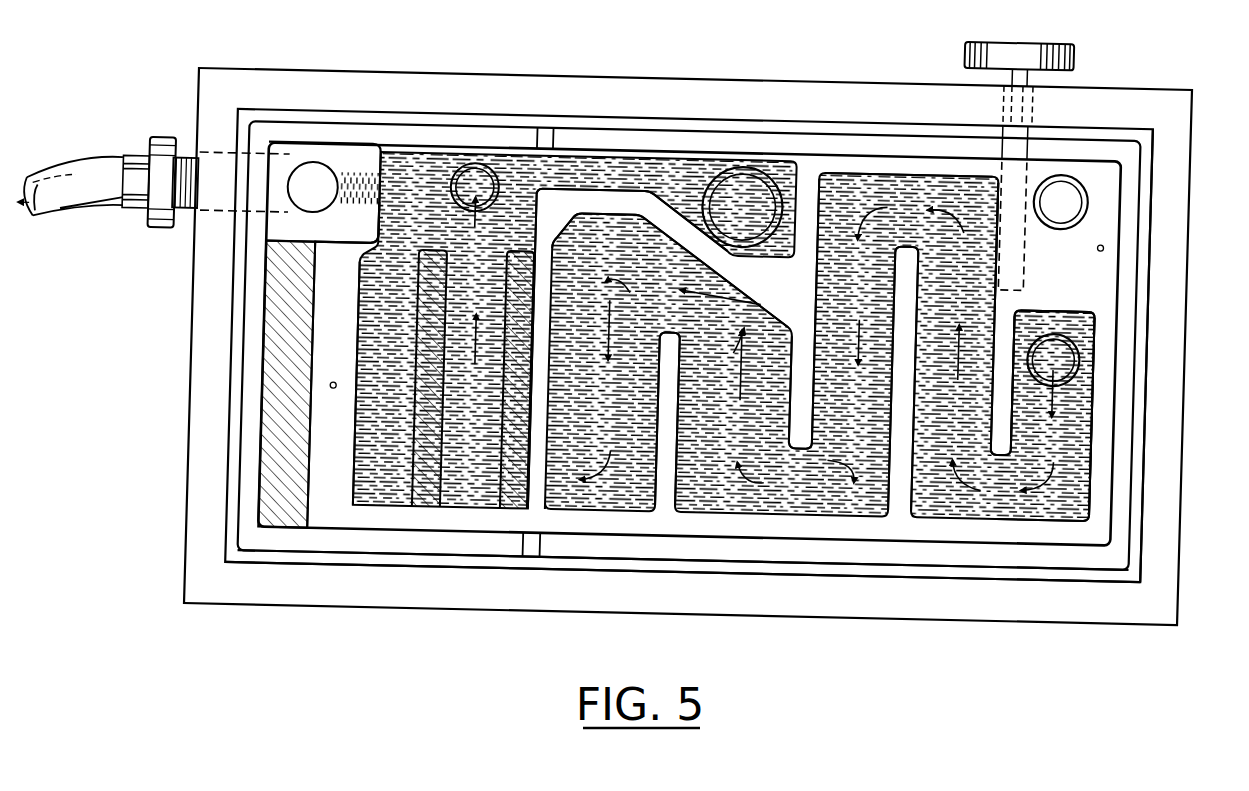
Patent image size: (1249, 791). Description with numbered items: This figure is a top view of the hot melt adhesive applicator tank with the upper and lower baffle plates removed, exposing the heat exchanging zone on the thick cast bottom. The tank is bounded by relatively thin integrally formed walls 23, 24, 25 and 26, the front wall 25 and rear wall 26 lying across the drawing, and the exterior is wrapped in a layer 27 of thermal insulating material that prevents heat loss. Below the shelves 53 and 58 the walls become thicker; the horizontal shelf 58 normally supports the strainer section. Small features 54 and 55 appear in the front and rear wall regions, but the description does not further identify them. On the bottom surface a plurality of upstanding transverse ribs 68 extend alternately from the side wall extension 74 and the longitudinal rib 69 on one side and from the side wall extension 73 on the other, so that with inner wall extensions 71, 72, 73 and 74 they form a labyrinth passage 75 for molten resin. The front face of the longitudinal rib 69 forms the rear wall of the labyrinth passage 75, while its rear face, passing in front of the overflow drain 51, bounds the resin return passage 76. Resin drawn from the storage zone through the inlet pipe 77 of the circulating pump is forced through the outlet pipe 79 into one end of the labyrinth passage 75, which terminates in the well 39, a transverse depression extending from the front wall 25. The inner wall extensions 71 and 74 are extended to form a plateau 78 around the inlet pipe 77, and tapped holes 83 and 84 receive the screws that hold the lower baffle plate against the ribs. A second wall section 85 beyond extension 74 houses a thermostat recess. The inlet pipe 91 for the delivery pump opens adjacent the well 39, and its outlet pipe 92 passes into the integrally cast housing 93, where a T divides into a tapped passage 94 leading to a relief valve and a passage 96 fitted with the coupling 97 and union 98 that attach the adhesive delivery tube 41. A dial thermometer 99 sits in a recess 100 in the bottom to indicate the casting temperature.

The wall 23 is at (728, 520).
The wall 24 is at (628, 343).
The front wall 25 is at (682, 579).
The rear wall 26 is at (689, 328).
The layer of thermal insulating material 27 is at (983, 55).
The well 39 is at (471, 423).
The delivery tube 41 is at (84, 169).
The overflow drain 51 is at (742, 207).
The shelf 53 is at (967, 349).
The drain outlet 54 is at (540, 564).
The inlet 55 is at (536, 116).
The horizontal shelf 58 is at (176, 56).
The transverse ribs 68 is at (772, 346).
The longitudinal rib 69 is at (662, 258).
The inner wall extension 71 is at (1100, 417).
The inner wall extension 72 is at (333, 385).
The side wall extension 73 is at (637, 448).
The side wall extension 74 is at (909, 132).
The labyrinth passage 75 is at (1044, 460).
The resin return passage 76 is at (393, 78).
The inlet pipe 77 is at (1061, 202).
The plateau 78 is at (1044, 247).
The outlet pipe 79 is at (1053, 360).
The tapped hole 83 is at (1072, 256).
The tapped hole 84 is at (332, 365).
The second wall section 85 is at (226, 383).
The inlet pipe 91 is at (474, 187).
The outlet pipe 92 is at (318, 148).
The housing 93 is at (323, 192).
The tapped passage 94 is at (346, 222).
The passage 96 is at (245, 142).
The coupling 97 is at (178, 134).
The union 98 is at (153, 163).
The dial thermometer 99 is at (1019, 45).
The recess 100 is at (1054, 189).